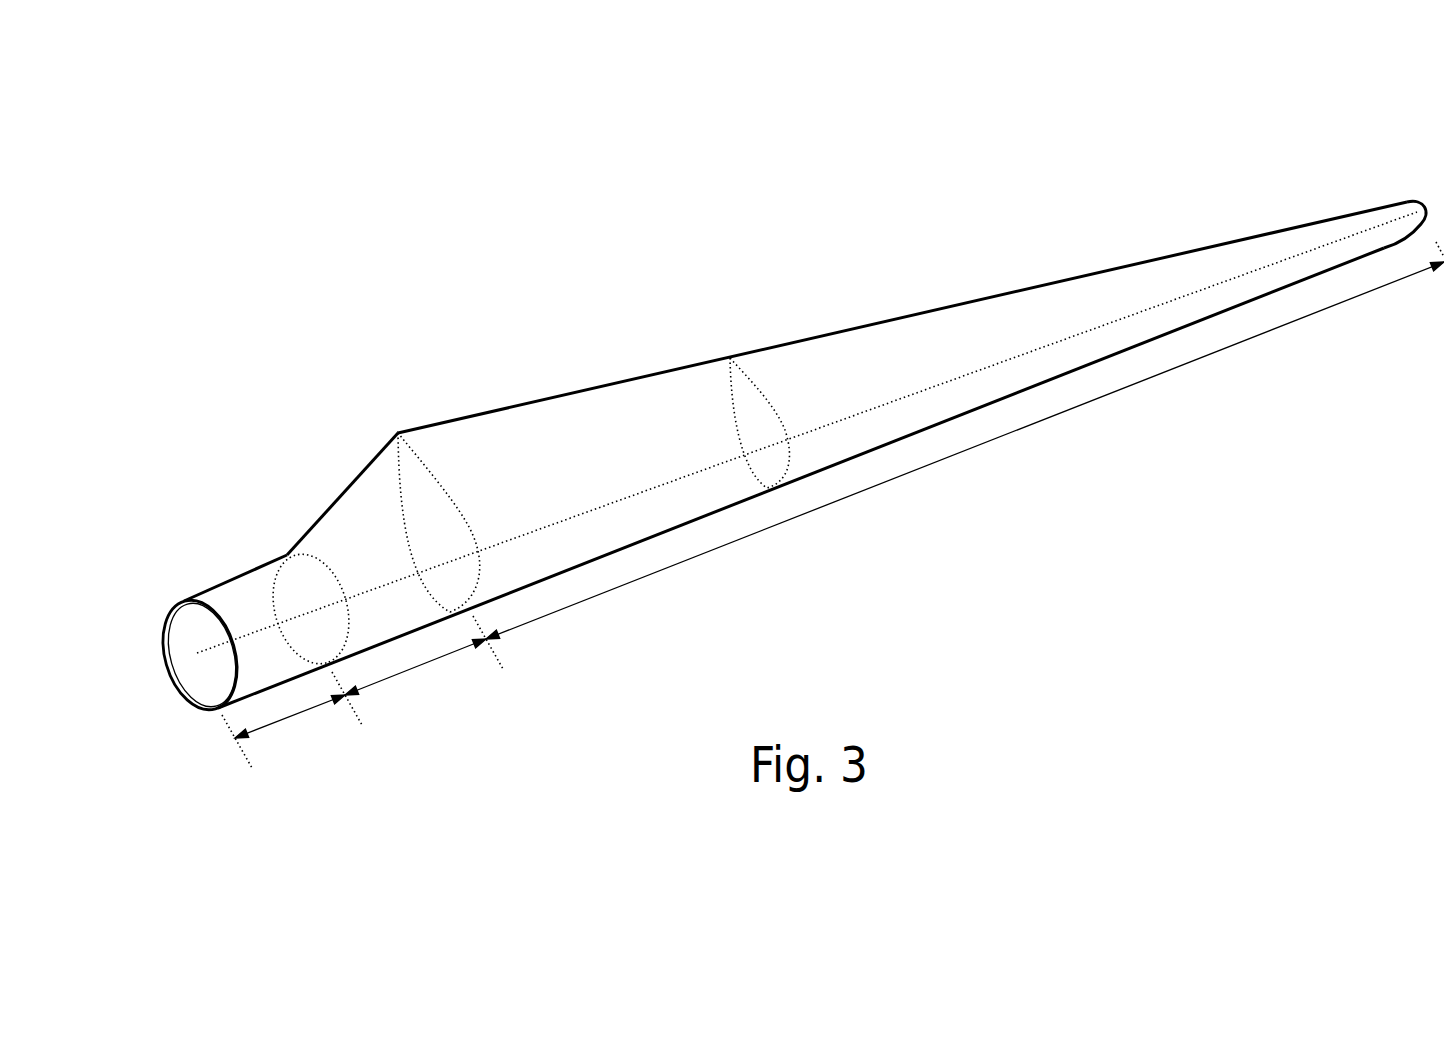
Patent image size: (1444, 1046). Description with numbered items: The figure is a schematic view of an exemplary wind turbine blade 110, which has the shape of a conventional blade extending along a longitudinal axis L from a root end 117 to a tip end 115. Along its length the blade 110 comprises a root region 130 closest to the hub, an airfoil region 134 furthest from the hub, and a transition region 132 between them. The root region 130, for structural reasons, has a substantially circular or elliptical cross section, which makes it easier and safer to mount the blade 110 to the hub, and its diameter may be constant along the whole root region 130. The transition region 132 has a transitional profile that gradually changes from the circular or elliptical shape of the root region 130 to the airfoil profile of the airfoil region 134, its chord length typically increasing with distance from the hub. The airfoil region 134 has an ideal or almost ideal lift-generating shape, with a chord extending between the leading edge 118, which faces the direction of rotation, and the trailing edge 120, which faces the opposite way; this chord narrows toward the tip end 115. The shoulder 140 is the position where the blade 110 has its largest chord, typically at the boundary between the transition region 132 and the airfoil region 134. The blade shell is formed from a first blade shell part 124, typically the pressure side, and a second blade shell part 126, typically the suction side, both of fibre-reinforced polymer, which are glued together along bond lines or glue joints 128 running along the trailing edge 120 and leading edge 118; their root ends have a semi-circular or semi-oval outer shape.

The wind turbine blade 110 is at (668, 313).
The tip end 115 is at (1421, 208).
The root end 117 is at (180, 618).
The leading edge 118 is at (1042, 382).
The trailing edge 120 is at (907, 317).
The first blade shell part 124 is at (203, 600).
The second blade shell part 126 is at (180, 692).
The bond lines/glue joints 128 is at (177, 603).
The root region 130 is at (280, 722).
The transition region 132 is at (415, 668).
The airfoil region 134 is at (897, 477).
The shoulder 140 is at (397, 433).
The longitudinal axis L is at (207, 649).